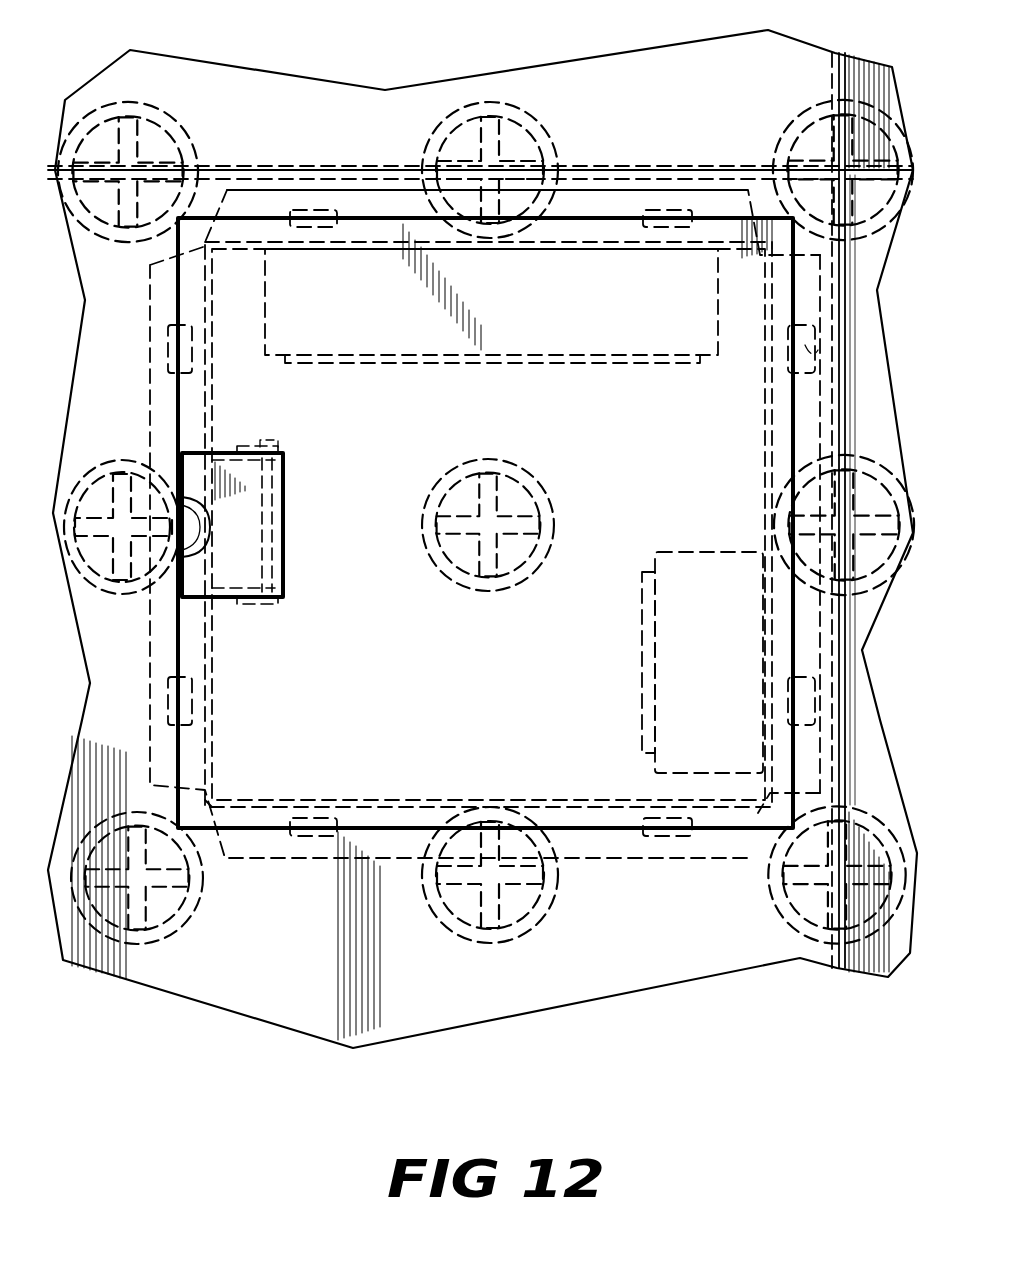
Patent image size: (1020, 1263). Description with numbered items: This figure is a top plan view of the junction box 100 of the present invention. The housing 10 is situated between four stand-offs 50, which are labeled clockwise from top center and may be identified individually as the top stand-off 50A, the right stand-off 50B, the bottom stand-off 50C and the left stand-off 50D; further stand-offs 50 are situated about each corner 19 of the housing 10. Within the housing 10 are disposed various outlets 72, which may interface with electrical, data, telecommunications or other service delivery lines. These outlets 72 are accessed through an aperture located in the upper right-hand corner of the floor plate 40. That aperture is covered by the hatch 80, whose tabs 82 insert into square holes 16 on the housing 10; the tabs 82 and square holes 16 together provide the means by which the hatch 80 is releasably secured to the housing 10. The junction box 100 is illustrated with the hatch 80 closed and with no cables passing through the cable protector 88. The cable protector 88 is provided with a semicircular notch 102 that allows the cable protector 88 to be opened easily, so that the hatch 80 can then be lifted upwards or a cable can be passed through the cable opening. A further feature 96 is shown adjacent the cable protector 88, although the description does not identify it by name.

The housing 10 is at (407, 800).
The square holes 16 is at (790, 345).
The corner 19 is at (215, 805).
The floor plate 40 is at (503, 78).
The stand-offs 50 is at (128, 105).
The fastener top center 50A is at (527, 118).
The fastener right center 50B is at (810, 470).
The fastener bottom center 50C is at (463, 930).
The fastener left center 50D is at (100, 590).
The outlets 72 is at (517, 343).
The hatch 80 is at (418, 695).
The tabs 82 is at (806, 347).
The cable protector 88 is at (285, 538).
The latch tab 96 is at (266, 445).
The junction box 100 is at (608, 862).
The semicircular notch 102 is at (183, 512).